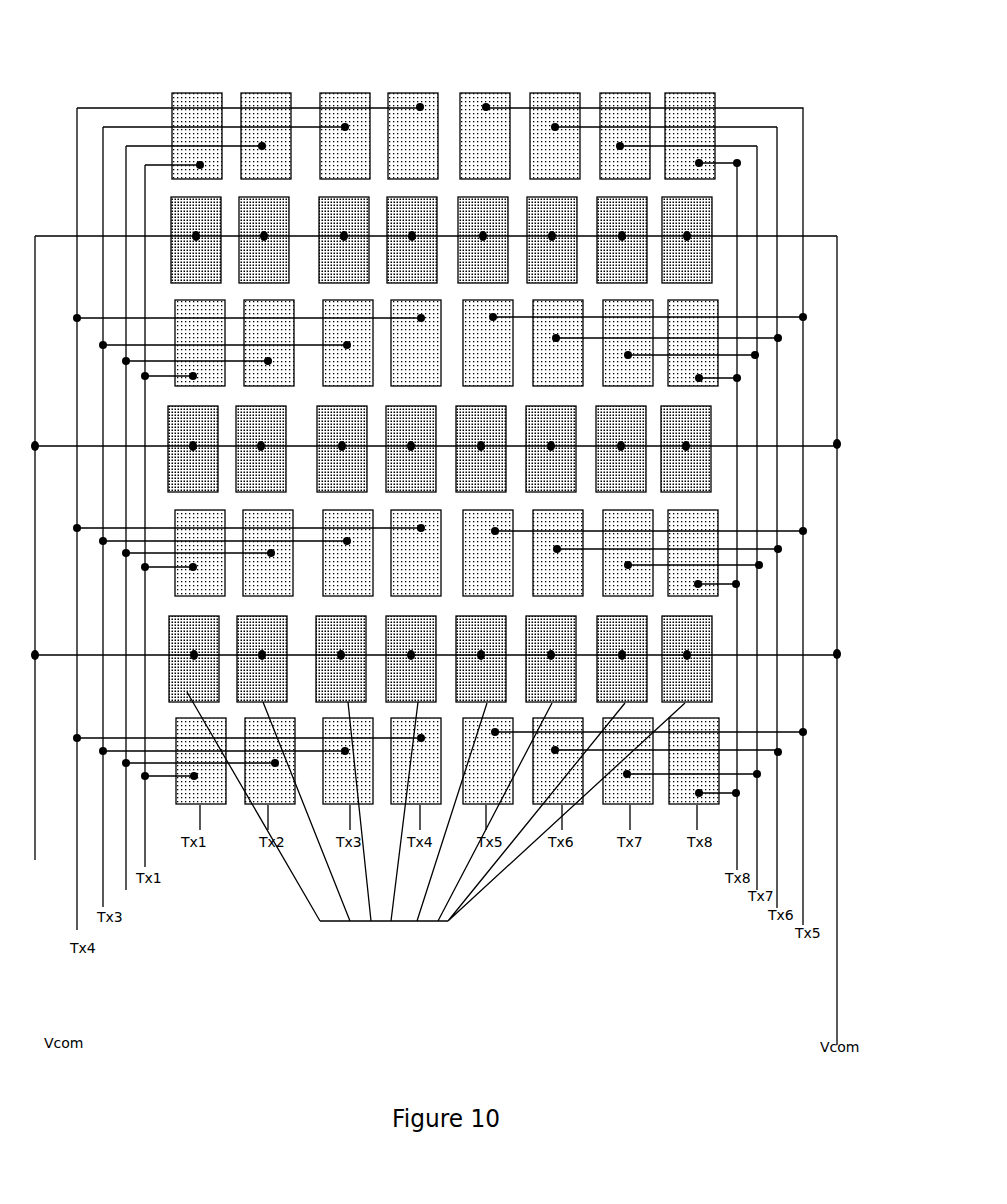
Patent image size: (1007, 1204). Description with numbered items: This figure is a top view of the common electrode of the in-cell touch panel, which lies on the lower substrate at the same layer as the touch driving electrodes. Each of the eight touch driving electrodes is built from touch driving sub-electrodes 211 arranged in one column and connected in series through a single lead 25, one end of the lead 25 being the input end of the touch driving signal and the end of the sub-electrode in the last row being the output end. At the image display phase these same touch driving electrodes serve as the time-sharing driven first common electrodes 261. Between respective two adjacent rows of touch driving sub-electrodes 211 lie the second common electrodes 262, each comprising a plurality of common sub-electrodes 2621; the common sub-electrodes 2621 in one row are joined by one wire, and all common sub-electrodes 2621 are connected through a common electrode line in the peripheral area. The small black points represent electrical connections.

The touch driving sub-electrode 211 is at (198, 115).
The common sub-electrode 2621 is at (557, 212).
The lead 25 is at (738, 105).
The second common electrode 262 is at (436, 820).
The first common electrode 261 is at (149, 525).